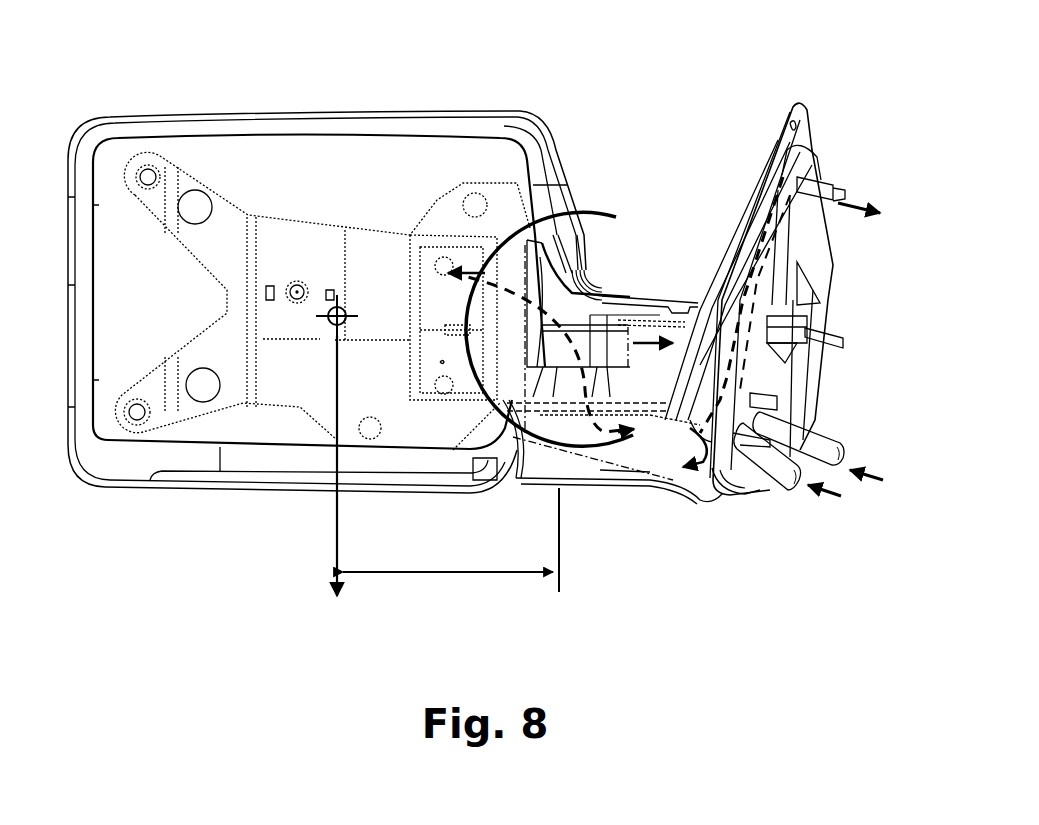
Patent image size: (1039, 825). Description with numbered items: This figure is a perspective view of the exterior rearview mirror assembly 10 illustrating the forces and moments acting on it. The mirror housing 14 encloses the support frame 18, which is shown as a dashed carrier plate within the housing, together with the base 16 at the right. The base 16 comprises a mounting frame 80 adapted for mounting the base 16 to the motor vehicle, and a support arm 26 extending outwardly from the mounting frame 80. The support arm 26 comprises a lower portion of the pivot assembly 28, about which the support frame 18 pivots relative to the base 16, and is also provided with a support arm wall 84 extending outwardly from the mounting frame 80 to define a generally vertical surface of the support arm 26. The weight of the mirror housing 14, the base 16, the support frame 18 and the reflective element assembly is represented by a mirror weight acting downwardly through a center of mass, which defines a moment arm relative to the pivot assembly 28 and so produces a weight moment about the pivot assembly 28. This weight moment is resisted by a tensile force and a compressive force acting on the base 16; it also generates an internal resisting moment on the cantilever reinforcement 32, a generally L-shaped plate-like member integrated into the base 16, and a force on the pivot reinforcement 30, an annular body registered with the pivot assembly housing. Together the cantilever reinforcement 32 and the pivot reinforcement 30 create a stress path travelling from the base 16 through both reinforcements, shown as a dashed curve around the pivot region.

The exterior rearview mirror assembly 10 is at (337, 24).
The mirror housing 14 is at (175, 115).
The support frame 18 is at (290, 216).
The base 16 is at (769, 150).
The cantilever reinforcement 32 is at (752, 268).
The pivot reinforcement 30 is at (575, 270).
The pivot assembly 28 is at (556, 390).
The support arm wall 84 is at (557, 458).
The support arm 26 is at (608, 487).
The mounting frame 80 is at (740, 488).